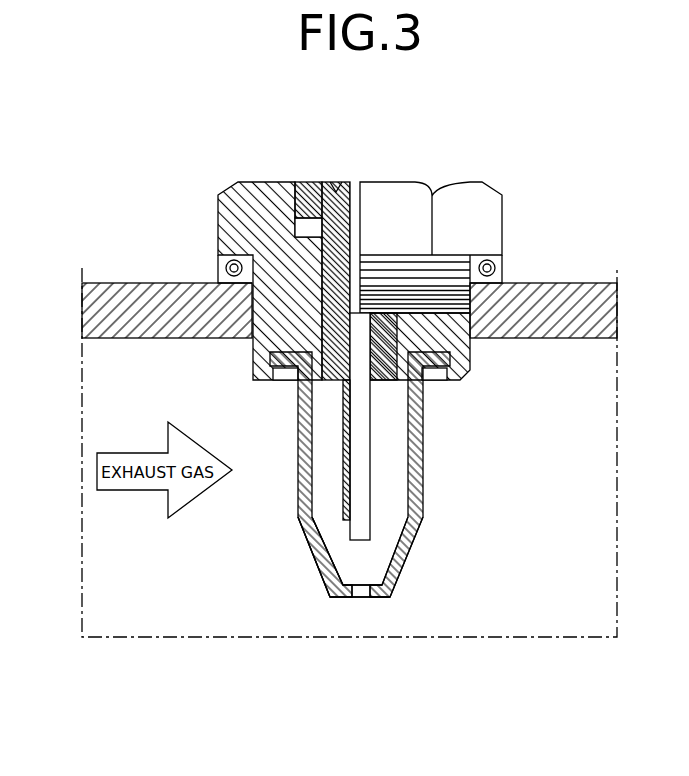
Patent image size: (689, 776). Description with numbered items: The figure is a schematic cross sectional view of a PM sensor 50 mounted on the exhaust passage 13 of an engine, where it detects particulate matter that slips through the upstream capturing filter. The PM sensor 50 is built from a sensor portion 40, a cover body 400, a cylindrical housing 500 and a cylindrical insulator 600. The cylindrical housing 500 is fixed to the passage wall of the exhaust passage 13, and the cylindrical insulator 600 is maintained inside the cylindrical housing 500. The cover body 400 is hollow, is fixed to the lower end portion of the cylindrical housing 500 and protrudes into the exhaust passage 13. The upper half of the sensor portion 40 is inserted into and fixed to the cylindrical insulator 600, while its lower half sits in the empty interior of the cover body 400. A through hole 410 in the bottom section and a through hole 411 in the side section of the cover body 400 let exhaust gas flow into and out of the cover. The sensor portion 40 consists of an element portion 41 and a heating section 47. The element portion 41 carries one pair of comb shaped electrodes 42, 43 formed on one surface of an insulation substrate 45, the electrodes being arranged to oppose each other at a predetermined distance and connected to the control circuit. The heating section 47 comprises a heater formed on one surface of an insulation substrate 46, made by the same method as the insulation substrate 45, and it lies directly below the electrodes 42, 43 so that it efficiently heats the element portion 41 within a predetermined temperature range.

The exhaust passage 13 is at (540, 358).
The PM sensor 50 is at (504, 178).
The cylindrical housing 500 is at (232, 186).
The cylindrical insulator 600 is at (300, 184).
The cover body 400 is at (377, 551).
The through hole 411 is at (415, 490).
The through hole 410 is at (363, 598).
The sensor portion 40 is at (378, 515).
The element portion 41 is at (405, 707).
The comb shaped electrode 42 is at (308, 540).
The comb shaped electrode 43 is at (345, 508).
The insulation substrate 45 is at (360, 530).
The insulation substrate 46 is at (360, 530).
The heating section 47 is at (236, 713).